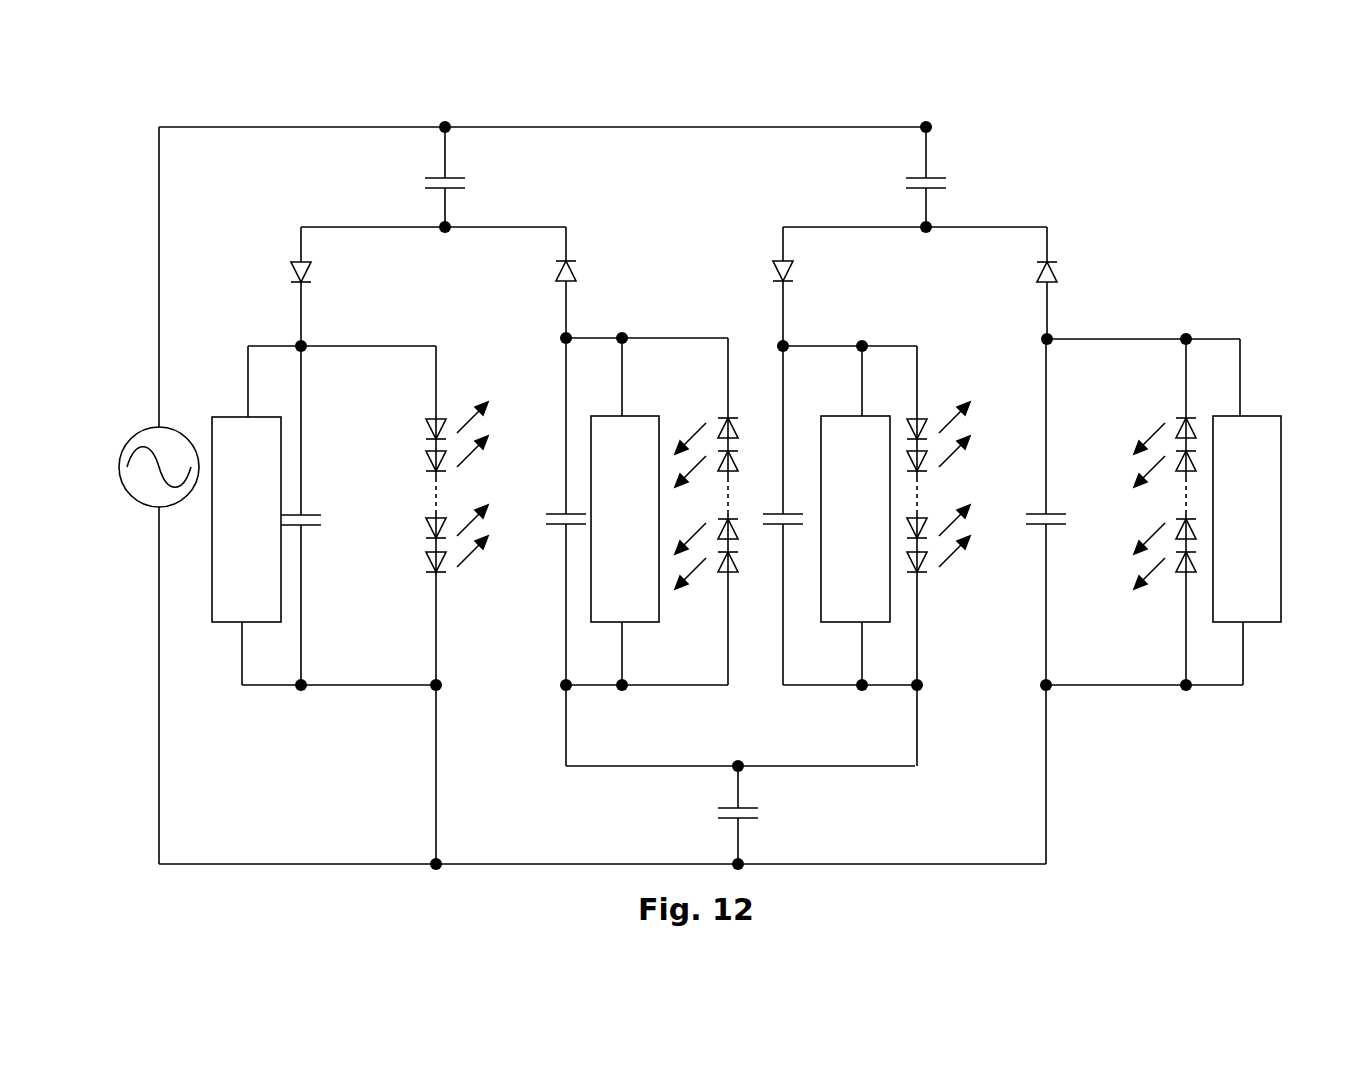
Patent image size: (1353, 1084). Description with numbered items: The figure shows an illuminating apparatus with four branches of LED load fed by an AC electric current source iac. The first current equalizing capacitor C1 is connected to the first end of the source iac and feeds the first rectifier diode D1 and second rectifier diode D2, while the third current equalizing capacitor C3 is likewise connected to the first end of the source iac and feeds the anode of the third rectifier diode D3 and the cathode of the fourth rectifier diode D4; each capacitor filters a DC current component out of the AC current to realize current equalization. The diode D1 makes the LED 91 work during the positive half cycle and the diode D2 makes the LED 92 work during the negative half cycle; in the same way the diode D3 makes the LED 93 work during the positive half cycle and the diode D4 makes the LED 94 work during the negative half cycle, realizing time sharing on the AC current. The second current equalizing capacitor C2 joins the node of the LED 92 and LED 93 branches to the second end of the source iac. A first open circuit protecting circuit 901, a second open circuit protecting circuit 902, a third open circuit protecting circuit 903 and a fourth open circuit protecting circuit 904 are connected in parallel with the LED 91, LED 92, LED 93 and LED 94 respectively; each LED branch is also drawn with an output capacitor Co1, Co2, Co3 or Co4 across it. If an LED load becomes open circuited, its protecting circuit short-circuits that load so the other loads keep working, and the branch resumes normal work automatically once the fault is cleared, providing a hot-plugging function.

The AC electric current source iac is at (144, 435).
The first current equalizing capacitor C1 is at (476, 177).
The second current equalizing capacitor C2 is at (758, 815).
The third current equalizing capacitor C3 is at (949, 177).
The first rectifier diode D1 is at (329, 286).
The second rectifier diode D2 is at (589, 282).
The third rectifier diode D3 is at (811, 286).
The fourth rectifier diode D4 is at (1079, 283).
The output capacitor Co1 is at (331, 515).
The output capacitor Co2 is at (546, 511).
The output capacitor Co3 is at (790, 515).
The output capacitor Co4 is at (1076, 512).
The LED 91 is at (415, 515).
The LED 92 is at (689, 511).
The LED 93 is at (958, 515).
The LED 94 is at (1141, 512).
The first open circuit protecting circuit 901 is at (246, 519).
The second open circuit protecting circuit 902 is at (625, 519).
The third open circuit protecting circuit 903 is at (855, 519).
The fourth open circuit protecting circuit 904 is at (1247, 519).